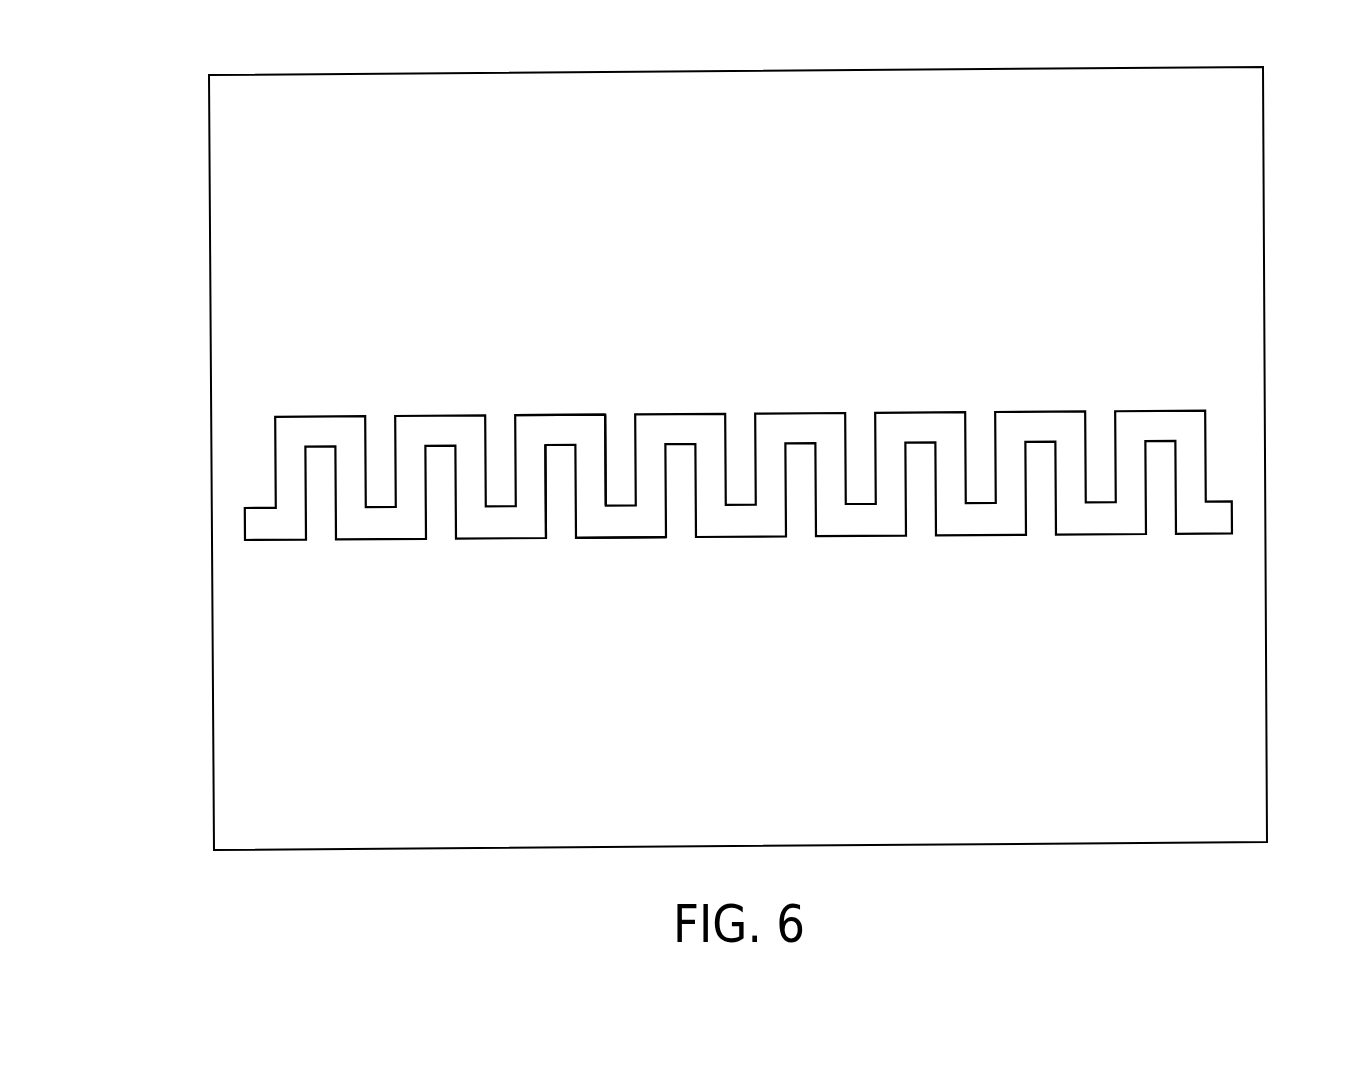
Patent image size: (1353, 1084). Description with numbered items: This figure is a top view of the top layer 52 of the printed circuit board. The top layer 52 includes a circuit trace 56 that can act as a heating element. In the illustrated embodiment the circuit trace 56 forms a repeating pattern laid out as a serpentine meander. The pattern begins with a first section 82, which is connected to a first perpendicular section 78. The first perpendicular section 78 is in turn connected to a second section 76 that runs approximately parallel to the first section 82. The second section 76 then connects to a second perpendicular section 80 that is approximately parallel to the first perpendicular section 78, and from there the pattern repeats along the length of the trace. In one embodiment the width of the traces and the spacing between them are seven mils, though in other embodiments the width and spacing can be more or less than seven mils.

The top layer 52 is at (1233, 224).
The circuit trace 56 is at (1022, 381).
The second section 76 is at (563, 415).
The first perpendicular section 78 is at (603, 477).
The second perpendicular section 80 is at (528, 492).
The first section 82 is at (633, 538).